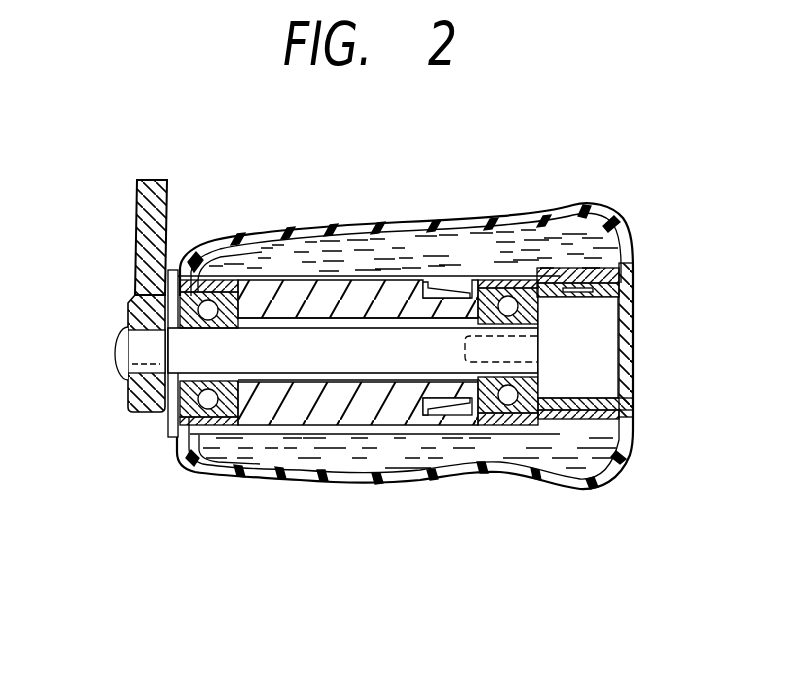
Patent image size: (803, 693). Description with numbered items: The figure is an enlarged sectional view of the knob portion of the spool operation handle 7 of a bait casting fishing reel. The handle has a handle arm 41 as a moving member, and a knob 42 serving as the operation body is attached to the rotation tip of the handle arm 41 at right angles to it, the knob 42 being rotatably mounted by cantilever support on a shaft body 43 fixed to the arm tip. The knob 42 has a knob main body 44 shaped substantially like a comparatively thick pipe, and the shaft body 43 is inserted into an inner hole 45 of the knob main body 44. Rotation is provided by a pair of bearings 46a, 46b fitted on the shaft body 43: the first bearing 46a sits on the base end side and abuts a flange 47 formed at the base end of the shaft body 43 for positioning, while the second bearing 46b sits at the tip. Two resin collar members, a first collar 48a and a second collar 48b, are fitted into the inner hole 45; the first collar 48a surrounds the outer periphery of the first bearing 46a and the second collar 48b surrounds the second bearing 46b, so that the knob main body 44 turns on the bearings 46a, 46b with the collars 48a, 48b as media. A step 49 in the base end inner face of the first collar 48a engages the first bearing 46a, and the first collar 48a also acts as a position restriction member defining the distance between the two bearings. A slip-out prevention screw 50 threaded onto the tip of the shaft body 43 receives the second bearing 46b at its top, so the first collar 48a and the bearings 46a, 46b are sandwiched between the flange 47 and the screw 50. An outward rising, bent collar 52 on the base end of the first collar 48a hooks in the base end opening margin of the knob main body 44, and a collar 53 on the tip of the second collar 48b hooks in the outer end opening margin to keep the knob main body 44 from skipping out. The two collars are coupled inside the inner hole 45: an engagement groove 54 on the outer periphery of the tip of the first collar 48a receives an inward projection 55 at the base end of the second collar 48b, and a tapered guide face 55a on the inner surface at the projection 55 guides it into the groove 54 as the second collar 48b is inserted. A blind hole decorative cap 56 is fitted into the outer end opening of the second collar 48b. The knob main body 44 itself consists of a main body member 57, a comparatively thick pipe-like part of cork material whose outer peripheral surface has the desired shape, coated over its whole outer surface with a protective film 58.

The spool operation handle 7 is at (107, 397).
The handle arm 41 is at (140, 212).
The knob 42 is at (390, 481).
The shaft body 43 is at (333, 372).
The knob main body 44 is at (482, 233).
The inner hole 45 is at (277, 294).
The first bearing 46a is at (228, 292).
The second bearing 46b is at (510, 414).
The flange 47 is at (137, 302).
The first collar 48a is at (342, 250).
The second collar 48b is at (583, 280).
The step 49 is at (232, 417).
The slip-out prevention screw 50 is at (553, 312).
The collar 52 is at (178, 428).
The collar 53 is at (637, 414).
The engagement groove 54 is at (456, 413).
The projection 55 is at (452, 283).
The guide face 55a is at (440, 410).
The blind hole decorative cap 56 is at (636, 352).
The main body member 57 is at (558, 468).
The protective film 58 is at (278, 480).